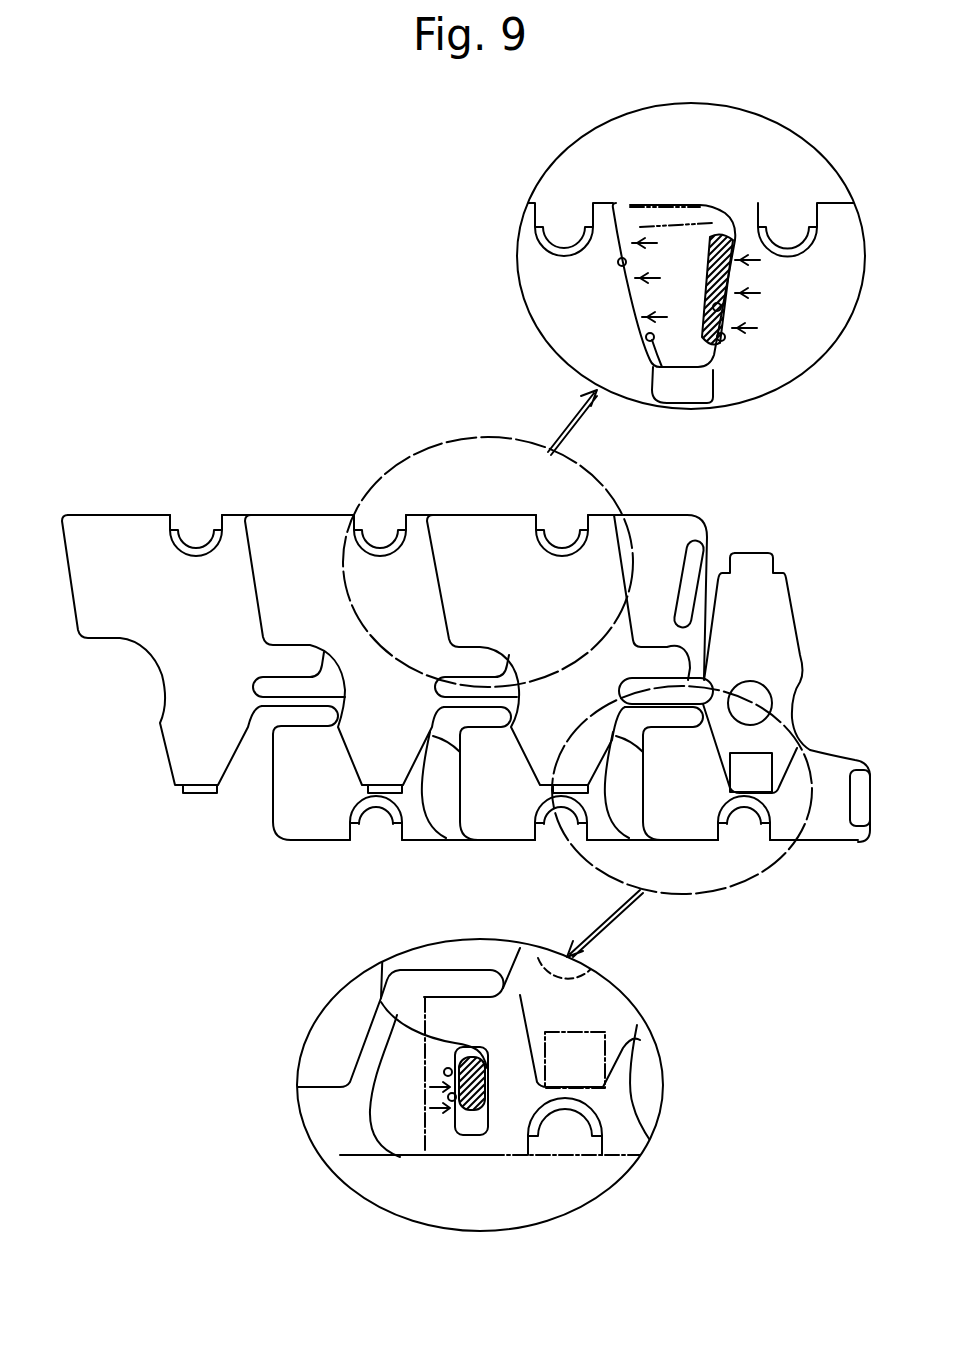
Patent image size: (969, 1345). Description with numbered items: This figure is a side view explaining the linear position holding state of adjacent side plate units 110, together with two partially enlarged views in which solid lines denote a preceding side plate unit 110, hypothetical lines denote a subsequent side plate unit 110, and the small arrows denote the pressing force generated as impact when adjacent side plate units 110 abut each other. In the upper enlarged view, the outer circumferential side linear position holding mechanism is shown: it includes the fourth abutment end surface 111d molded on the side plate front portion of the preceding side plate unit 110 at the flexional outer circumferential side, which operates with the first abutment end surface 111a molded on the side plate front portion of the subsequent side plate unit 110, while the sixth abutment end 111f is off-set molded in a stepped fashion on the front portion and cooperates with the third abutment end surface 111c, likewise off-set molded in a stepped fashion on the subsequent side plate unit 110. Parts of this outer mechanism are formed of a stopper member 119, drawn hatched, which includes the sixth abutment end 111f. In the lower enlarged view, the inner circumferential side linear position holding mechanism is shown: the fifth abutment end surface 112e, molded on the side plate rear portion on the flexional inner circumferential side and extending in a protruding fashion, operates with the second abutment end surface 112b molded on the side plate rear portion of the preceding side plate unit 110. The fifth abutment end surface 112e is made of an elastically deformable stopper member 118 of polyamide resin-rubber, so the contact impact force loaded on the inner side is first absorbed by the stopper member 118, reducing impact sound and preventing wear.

The side plate unit 110 is at (128, 535).
The stopper member 119 is at (720, 237).
The first abutment end surface 111a is at (623, 257).
The third abutment end surface 111c is at (733, 310).
The fourth abutment end surface 111d is at (646, 337).
The sixth abutment end 111f is at (670, 383).
The fifth abutment end surface 112e is at (415, 1094).
The stopper member 118 is at (470, 1102).
The second abutment end surface 112b is at (477, 1108).